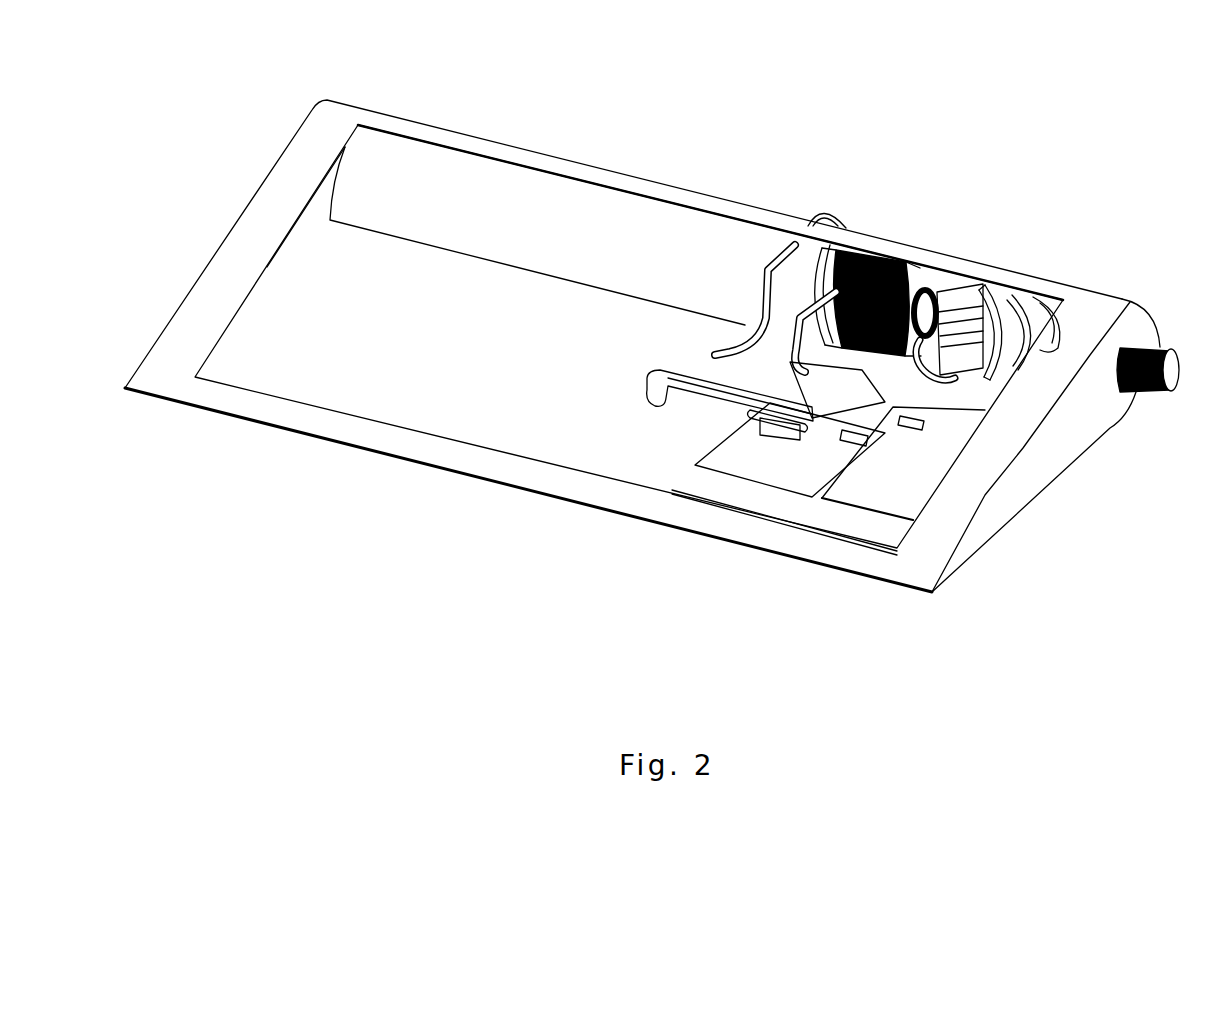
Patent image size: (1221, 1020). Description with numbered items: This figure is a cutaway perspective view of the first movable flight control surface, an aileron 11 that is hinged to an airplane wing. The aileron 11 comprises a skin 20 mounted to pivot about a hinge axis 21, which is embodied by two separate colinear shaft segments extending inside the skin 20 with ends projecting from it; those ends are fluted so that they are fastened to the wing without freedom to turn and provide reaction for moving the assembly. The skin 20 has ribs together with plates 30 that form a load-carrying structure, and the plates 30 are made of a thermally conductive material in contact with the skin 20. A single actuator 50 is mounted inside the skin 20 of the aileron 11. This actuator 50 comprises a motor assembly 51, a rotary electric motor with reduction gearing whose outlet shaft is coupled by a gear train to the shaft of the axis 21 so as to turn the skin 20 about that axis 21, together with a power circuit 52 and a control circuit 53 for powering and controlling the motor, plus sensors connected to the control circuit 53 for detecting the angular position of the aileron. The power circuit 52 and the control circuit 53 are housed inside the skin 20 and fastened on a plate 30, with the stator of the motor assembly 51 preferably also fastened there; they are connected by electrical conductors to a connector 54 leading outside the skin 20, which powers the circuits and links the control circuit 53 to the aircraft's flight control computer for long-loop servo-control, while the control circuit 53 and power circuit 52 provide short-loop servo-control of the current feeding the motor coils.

The aileron 11 is at (460, 489).
The skin 20 is at (1048, 468).
The hinge axis 21 is at (1140, 398).
The plate 30 is at (852, 520).
The actuator 50 is at (743, 484).
The motor assembly 51 is at (890, 400).
The power circuit 52 is at (790, 397).
The control circuit 53 is at (913, 380).
The connector 54 is at (825, 213).